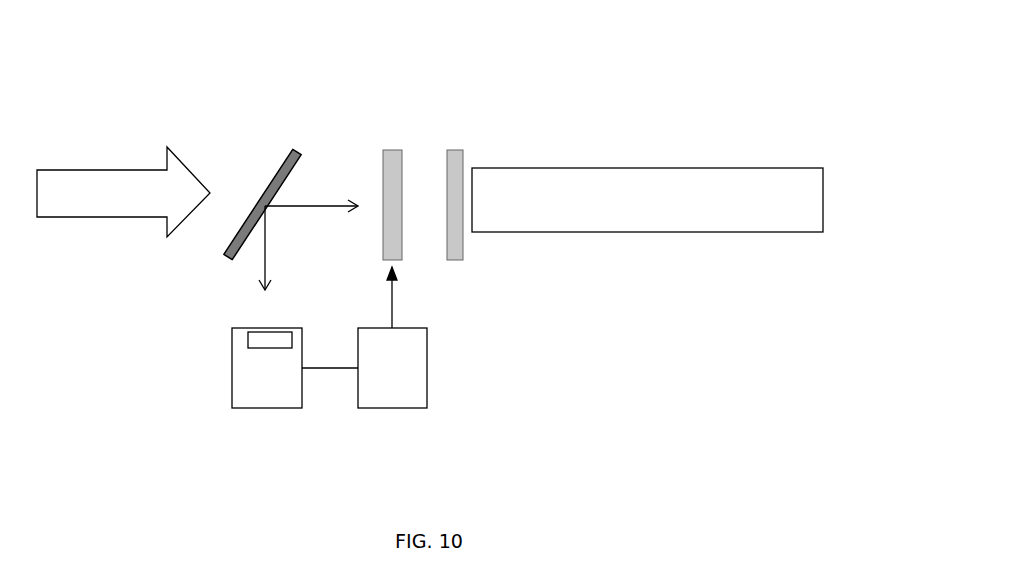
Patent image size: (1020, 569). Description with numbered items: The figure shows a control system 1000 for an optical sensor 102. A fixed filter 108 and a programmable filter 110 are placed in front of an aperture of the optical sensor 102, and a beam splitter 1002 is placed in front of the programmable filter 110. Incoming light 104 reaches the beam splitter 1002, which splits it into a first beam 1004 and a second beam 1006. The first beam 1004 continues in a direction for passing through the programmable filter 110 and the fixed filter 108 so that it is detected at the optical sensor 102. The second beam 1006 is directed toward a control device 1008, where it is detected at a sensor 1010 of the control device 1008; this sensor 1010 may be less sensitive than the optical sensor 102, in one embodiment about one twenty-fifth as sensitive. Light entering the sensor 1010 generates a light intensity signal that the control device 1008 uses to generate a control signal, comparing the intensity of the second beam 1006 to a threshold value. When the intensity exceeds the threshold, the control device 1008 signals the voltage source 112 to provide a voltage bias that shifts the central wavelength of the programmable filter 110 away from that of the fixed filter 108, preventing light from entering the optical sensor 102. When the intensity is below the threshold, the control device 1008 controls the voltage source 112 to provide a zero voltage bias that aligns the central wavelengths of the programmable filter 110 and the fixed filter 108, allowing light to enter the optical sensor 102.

The control system 1000 is at (340, 92).
The light 104 is at (110, 167).
The beam splitter 1002 is at (282, 168).
The first beam 1004 is at (313, 202).
The second beam 1006 is at (266, 268).
The programmable filter 110 is at (394, 148).
The fixed filter 108 is at (454, 148).
The optical sensor 102 is at (769, 167).
The control device 1008 is at (268, 408).
The sensor 1010 is at (253, 348).
The voltage source 112 is at (393, 408).